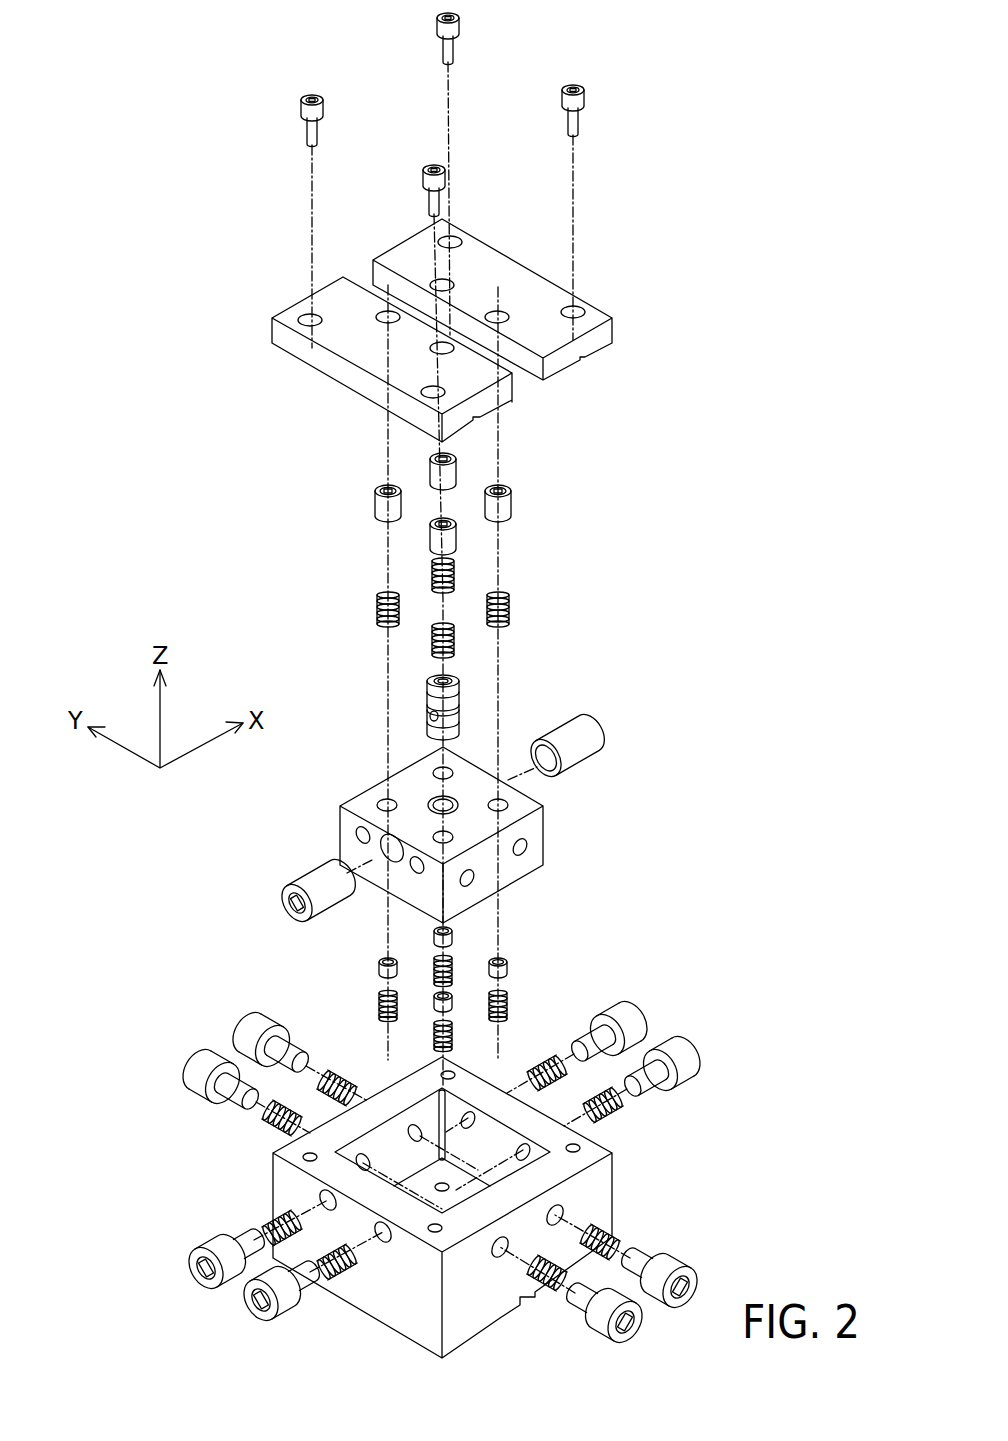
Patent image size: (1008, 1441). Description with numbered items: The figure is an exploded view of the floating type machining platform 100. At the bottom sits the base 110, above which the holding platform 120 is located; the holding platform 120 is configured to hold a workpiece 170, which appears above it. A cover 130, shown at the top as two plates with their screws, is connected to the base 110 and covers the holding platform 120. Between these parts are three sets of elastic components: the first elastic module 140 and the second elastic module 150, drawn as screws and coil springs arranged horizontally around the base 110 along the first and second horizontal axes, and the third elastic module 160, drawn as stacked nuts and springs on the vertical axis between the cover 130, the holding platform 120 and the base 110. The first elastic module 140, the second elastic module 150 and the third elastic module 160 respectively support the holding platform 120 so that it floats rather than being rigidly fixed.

The floating type machining platform 100 is at (673, 140).
The base 110 is at (598, 1197).
The holding platform 120 is at (540, 833).
The cover 130 is at (395, 236).
The first elastic module 140 is at (694, 1021).
The second elastic module 150 is at (220, 1020).
The third elastic module 160 is at (344, 553).
The workpiece 170 is at (479, 699).